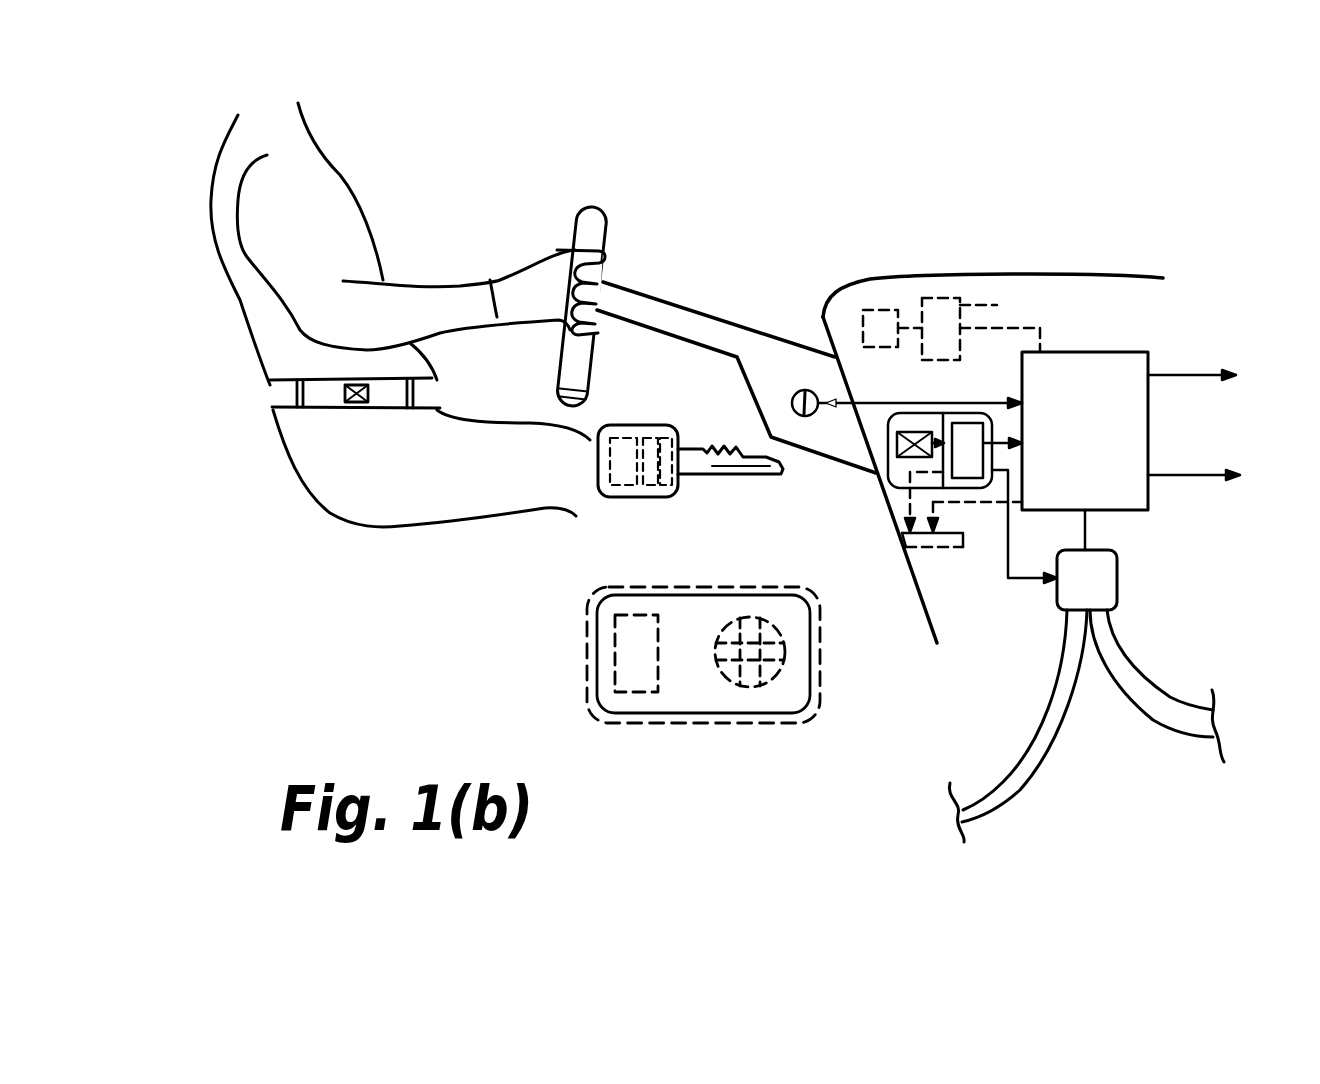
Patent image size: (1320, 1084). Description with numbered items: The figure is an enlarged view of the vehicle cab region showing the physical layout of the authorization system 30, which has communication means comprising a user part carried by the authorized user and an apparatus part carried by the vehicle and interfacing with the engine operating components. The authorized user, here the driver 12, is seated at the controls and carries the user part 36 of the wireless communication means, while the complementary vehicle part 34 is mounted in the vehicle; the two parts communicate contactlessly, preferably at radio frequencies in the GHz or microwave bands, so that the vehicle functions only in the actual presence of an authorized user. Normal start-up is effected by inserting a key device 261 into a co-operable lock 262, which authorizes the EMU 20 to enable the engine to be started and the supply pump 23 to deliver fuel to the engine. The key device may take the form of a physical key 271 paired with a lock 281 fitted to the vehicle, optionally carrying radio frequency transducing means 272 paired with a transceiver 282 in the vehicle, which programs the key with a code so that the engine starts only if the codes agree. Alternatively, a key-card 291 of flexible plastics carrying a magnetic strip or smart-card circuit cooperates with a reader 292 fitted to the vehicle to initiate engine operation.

The driver 12 is at (227, 256).
The user part of the wireless communication means 36 is at (360, 407).
The authorization system 30 is at (678, 526).
The physical key 271 is at (735, 450).
The radio frequency transducing means 272 is at (590, 434).
The lock 281 is at (797, 389).
The transceiver 282 is at (887, 320).
The EMU 20 is at (1137, 500).
The vehicle part of the wireless communication means 34 is at (900, 467).
The reader 292 is at (945, 547).
The supply pump 23 is at (1100, 585).
The key-card 291 is at (587, 685).
The lock 262 is at (856, 528).
The key device 261 is at (840, 652).